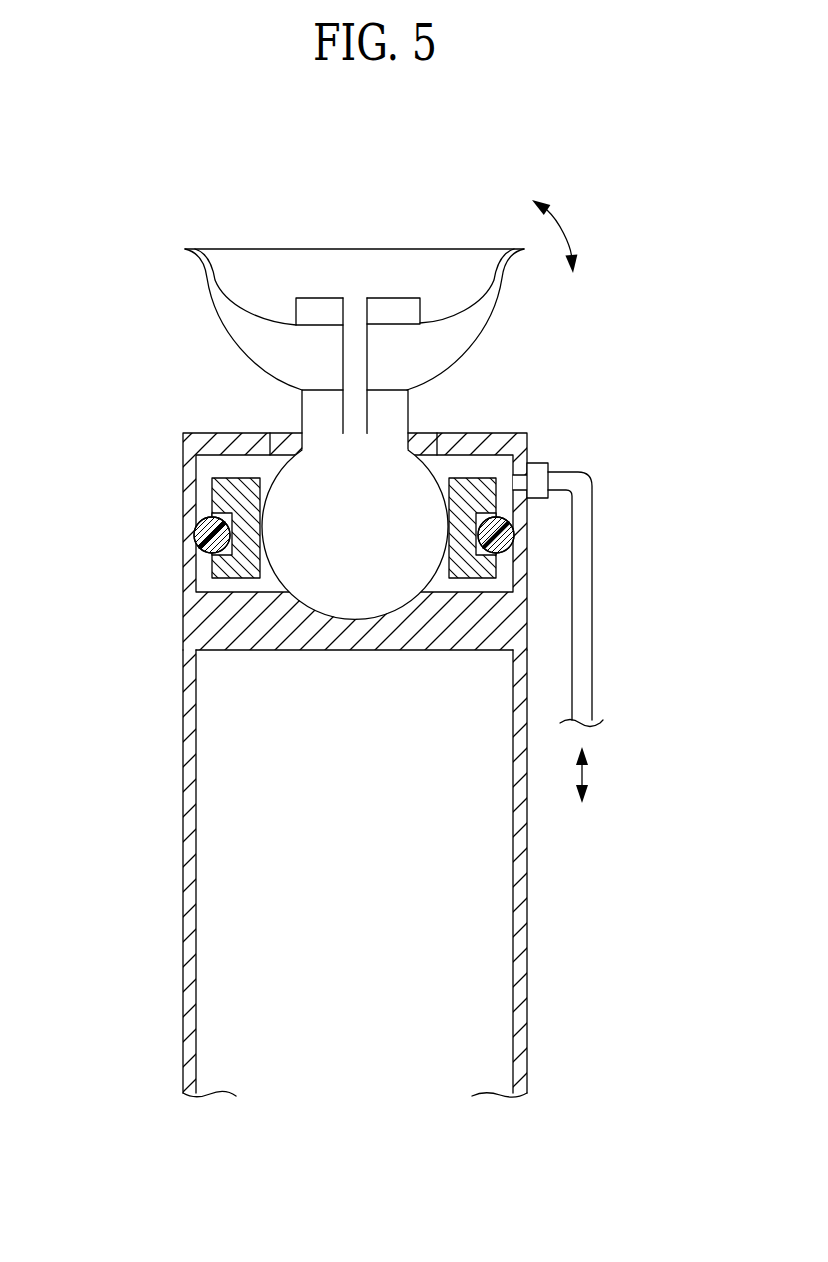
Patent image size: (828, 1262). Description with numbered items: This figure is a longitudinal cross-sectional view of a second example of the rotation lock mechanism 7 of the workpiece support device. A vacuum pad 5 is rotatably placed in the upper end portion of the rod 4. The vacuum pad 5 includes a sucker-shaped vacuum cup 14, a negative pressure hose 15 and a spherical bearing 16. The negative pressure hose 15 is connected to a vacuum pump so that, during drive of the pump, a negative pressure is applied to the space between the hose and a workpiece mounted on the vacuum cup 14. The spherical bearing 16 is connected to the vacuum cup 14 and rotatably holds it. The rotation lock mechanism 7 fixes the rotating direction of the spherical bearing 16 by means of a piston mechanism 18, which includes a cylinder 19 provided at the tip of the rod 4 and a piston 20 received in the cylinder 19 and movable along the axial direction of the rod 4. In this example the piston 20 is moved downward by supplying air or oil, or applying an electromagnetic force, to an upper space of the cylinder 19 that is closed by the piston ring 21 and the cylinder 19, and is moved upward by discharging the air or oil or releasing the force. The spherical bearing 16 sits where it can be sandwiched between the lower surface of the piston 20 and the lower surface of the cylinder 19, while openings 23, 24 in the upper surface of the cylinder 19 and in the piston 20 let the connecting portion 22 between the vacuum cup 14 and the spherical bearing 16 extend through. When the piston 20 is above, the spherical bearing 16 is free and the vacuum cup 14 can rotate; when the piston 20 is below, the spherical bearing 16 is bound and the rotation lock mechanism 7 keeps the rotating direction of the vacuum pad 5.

The rod 4 is at (545, 947).
The vacuum pad 5 is at (416, 206).
The rotation lock mechanism 7 is at (616, 375).
The vacuum cup 14 is at (292, 249).
The negative pressure hose 15 is at (342, 445).
The spherical bearing 16 is at (408, 450).
The piston mechanism 18 is at (164, 485).
The cylinder 19 is at (183, 557).
The piston 20 is at (196, 592).
The piston ring 21 is at (514, 542).
The connecting portion 22 is at (302, 403).
The opening 23 is at (280, 433).
The opening 24 is at (440, 490).